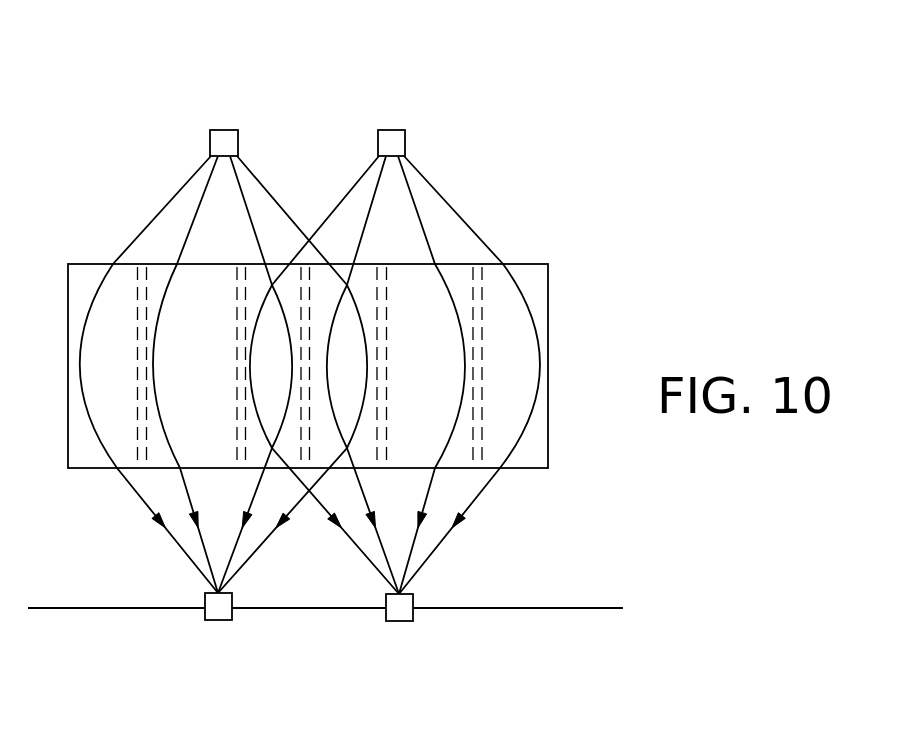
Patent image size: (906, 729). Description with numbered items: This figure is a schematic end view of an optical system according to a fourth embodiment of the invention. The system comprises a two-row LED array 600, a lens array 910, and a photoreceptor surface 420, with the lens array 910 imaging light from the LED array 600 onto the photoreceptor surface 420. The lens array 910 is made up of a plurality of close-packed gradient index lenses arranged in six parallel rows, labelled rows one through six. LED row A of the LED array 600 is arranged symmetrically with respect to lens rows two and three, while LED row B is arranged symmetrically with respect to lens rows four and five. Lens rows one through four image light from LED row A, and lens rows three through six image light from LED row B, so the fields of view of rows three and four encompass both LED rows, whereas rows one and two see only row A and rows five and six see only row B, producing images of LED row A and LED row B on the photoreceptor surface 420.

The two-row LED array 600 is at (247, 85).
The lens array 910 is at (549, 305).
The photoreceptor surface 420 is at (500, 607).